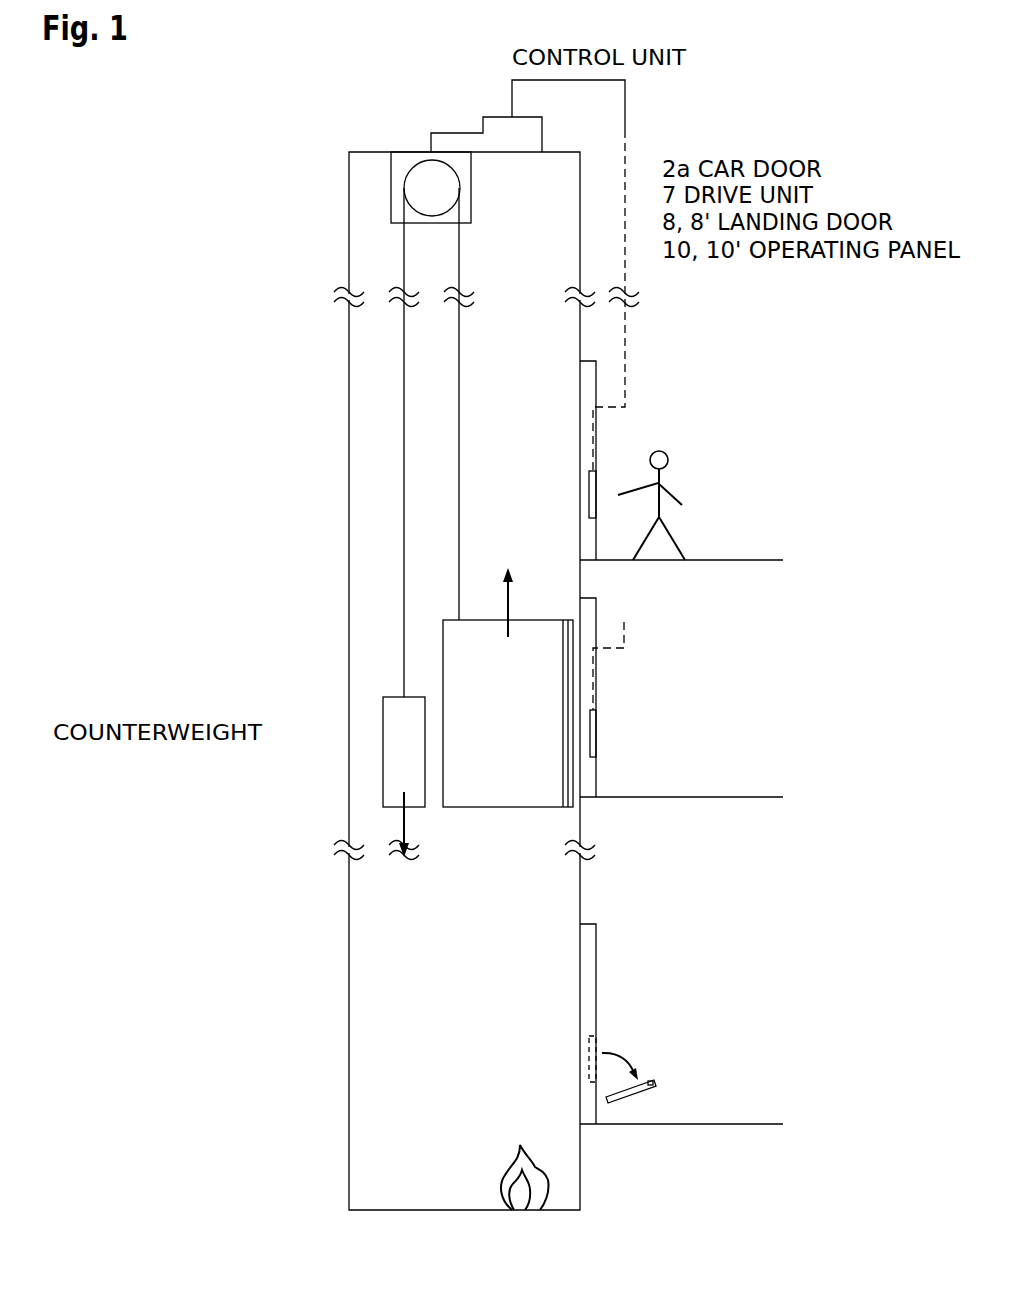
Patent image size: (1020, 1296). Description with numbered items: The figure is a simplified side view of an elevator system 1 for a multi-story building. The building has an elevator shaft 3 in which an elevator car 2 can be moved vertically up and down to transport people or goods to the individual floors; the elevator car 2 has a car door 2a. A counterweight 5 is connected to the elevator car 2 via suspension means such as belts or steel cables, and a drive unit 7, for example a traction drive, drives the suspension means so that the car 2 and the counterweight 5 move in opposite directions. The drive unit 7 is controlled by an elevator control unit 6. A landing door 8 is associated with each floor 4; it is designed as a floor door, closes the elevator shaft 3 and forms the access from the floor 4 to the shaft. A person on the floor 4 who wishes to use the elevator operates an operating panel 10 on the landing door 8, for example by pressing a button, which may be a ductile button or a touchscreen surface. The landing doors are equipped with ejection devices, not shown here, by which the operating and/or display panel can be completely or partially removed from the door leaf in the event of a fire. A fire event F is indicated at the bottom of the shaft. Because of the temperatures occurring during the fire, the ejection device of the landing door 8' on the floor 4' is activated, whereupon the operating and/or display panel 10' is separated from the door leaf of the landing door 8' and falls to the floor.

The elevator system 1 is at (312, 104).
The elevator car 2 is at (498, 800).
The car door 2a is at (573, 777).
The elevator shaft 3 is at (349, 543).
The floor 4 is at (681, 521).
The floor 4' is at (681, 1086).
The counterweight 5 is at (390, 731).
The elevator control unit 6 is at (497, 125).
The drive unit 7 is at (402, 162).
The landing door 8 is at (621, 460).
The landing door 8' is at (624, 1024).
The operating panel 10 is at (633, 471).
The operating and/or display panel 10' is at (663, 1069).
The fire event F is at (494, 1160).